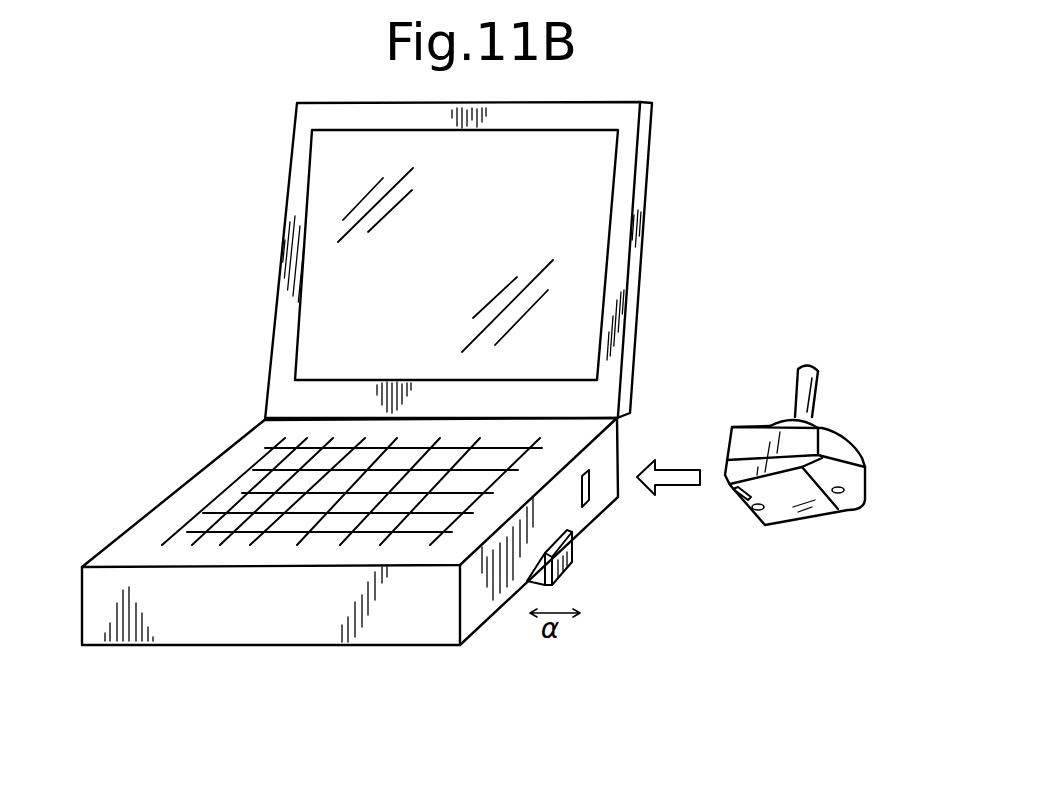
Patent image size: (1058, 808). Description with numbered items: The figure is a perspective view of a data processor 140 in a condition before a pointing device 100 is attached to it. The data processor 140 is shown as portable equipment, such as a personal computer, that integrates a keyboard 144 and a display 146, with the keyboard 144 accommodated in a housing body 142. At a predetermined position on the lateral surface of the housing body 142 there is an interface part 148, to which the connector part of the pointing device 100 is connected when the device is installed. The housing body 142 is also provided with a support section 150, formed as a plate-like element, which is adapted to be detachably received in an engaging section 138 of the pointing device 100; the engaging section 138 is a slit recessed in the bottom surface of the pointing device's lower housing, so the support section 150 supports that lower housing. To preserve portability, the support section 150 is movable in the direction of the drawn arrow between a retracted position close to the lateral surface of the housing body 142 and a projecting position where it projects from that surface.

The pointing device 100 is at (795, 435).
The engaging section 138 is at (739, 498).
The data processor 140 is at (405, 398).
The housing body 142 is at (278, 627).
The keyboard 144 is at (278, 503).
The display 146 is at (530, 177).
The interface part 148 is at (588, 490).
The support section 150 is at (568, 558).